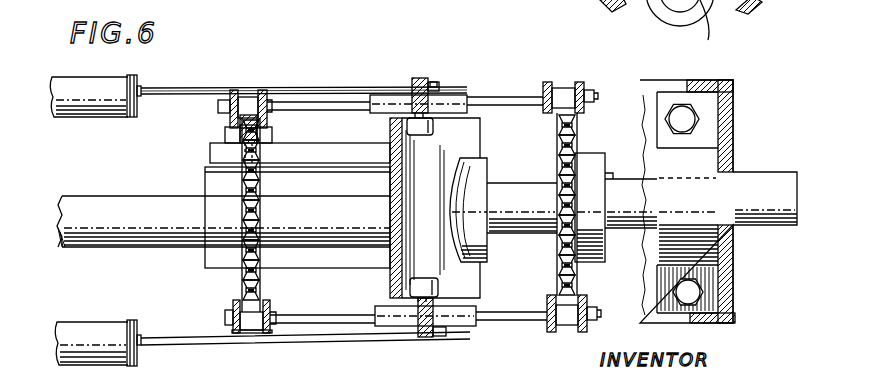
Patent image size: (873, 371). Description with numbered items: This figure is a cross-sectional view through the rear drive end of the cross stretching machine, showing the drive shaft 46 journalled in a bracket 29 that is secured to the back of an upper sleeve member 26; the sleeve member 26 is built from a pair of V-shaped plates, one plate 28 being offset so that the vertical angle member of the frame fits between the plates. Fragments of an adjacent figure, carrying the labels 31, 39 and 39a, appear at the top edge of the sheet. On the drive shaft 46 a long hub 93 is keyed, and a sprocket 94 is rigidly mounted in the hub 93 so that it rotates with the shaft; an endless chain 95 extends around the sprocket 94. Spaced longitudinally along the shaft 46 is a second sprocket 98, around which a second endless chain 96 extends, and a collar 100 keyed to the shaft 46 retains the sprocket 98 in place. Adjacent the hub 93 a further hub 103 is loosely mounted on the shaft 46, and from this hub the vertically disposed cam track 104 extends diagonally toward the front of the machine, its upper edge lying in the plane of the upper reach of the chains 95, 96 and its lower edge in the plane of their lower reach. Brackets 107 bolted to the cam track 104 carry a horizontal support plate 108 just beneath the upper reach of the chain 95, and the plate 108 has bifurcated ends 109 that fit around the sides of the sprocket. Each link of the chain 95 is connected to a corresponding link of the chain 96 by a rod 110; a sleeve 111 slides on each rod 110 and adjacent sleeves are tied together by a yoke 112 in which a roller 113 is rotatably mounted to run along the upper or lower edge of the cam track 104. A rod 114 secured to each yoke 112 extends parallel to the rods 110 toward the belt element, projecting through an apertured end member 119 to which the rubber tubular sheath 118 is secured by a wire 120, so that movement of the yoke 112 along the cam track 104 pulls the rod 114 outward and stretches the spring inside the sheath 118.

The upper sleeve member 26 is at (740, 104).
The V-shaped plate 28 is at (716, 0).
The bracket 29 is at (700, 165).
The shaft 31 is at (684, 2).
The roller 39 is at (662, 8).
The roller 39a is at (720, 28).
The drive shaft 46 is at (99, 174).
The hub 93 is at (205, 180).
The sprocket 94 is at (244, 290).
The endless chain 95 is at (250, 100).
The endless chain 96 is at (565, 86).
The sprocket 98 is at (558, 118).
The collar 100 is at (582, 155).
The hub 103 is at (482, 183).
The cam track 104 is at (390, 185).
The bracket 107 is at (308, 152).
The support plate 108 is at (228, 133).
The bifurcated end 109 is at (272, 135).
The rod 110 is at (340, 104).
The sleeve 111 is at (450, 95).
The yoke 112 is at (421, 78).
The roller 113 is at (434, 127).
The rod 114 is at (203, 92).
The tubular sheath 118 is at (77, 62).
The apertured end member 119 is at (142, 80).
The wire 120 is at (130, 78).